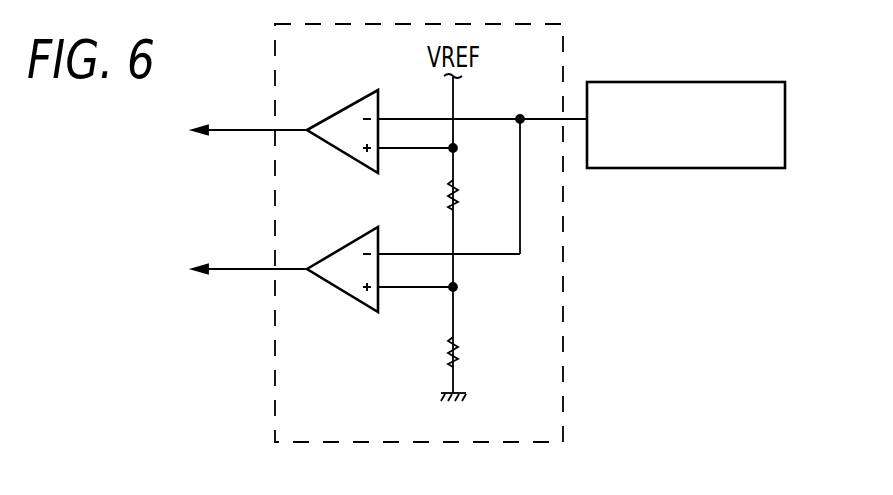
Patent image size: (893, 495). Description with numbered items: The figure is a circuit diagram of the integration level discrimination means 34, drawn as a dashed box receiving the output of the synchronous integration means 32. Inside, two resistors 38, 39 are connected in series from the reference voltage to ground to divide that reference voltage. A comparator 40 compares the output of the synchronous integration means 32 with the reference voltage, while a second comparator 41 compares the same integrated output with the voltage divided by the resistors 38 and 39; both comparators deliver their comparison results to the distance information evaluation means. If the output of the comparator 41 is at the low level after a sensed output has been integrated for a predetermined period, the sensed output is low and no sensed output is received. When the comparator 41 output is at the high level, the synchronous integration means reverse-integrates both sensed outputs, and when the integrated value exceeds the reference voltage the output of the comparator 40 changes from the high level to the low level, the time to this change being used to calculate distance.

The synchronous integration means 32 is at (722, 82).
The integration level discrimination means 34 is at (563, 372).
The resistor 38 is at (460, 196).
The resistor 39 is at (460, 356).
The comparator 40 is at (347, 104).
The comparator 41 is at (343, 246).